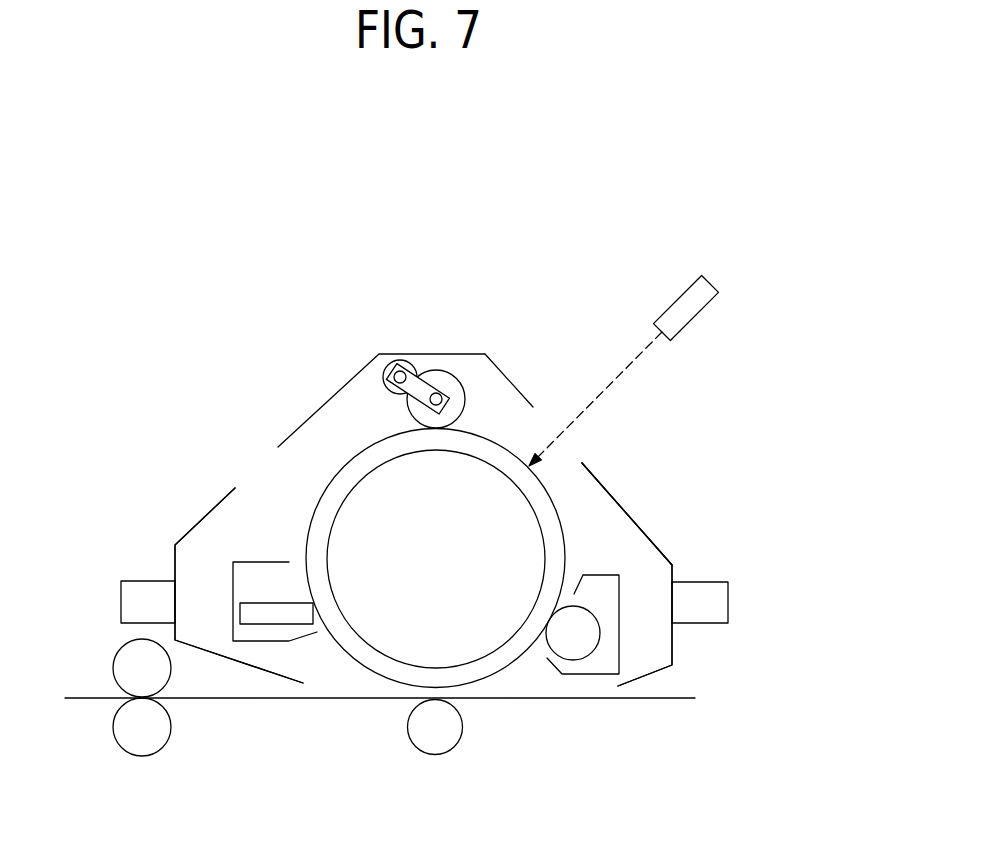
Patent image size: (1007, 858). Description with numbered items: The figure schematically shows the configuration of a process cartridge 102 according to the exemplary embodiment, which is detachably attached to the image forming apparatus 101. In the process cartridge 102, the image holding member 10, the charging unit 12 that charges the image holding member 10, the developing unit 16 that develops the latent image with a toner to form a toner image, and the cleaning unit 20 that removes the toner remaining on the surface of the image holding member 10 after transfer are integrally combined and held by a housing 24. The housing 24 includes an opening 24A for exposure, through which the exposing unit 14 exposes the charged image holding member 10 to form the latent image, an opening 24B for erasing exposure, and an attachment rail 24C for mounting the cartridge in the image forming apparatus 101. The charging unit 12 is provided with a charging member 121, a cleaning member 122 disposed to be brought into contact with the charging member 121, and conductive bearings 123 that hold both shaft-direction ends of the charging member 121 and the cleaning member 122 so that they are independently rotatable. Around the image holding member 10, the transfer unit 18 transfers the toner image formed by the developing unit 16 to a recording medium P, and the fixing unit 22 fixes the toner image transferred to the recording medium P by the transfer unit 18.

The image forming apparatus 101 is at (527, 220).
The image holding member 10 is at (350, 462).
The charging unit 12 is at (446, 345).
The charging member 121 is at (452, 384).
The cleaning member 122 is at (395, 362).
The conductive bearings 123 is at (424, 388).
The exposing unit 14 is at (697, 307).
The opening for exposure 24A is at (566, 405).
The process cartridge 102 is at (608, 470).
The housing 24 is at (635, 520).
The opening for erasing exposure 24B is at (240, 450).
The attachment rail 24C is at (140, 581).
The cleaning unit 20 is at (263, 561).
The developing unit 16 is at (577, 590).
The recording medium P is at (638, 700).
The fixing unit 22 is at (141, 756).
The transfer unit 18 is at (436, 755).